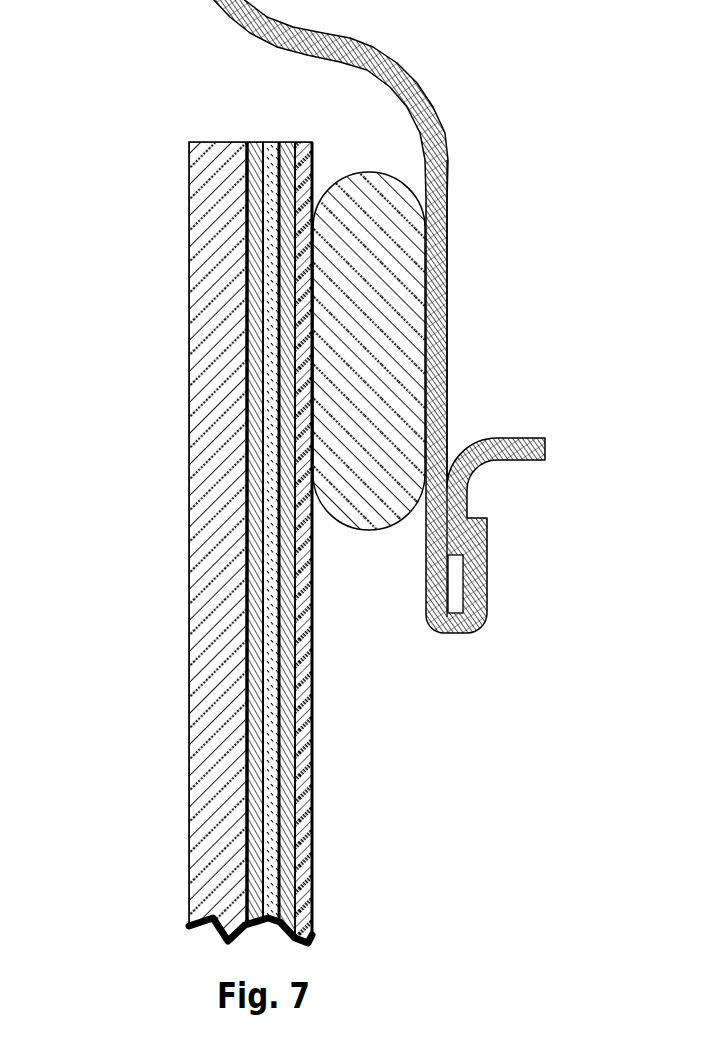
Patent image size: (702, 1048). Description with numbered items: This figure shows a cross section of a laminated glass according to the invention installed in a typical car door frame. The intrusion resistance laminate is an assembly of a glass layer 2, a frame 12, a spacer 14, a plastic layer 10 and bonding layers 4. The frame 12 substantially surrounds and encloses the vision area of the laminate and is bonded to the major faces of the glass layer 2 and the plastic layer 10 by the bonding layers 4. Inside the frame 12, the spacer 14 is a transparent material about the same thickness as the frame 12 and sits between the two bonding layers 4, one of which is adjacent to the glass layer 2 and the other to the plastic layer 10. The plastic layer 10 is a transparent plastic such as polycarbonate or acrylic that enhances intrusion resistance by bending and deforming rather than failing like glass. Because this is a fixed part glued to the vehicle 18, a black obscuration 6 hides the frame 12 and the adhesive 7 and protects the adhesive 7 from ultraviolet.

The glass layer 2 is at (263, 492).
The bonding layers 4 is at (246, 883).
The black obscuration 6 is at (246, 313).
The adhesive 7 is at (362, 540).
The plastic layer 10 is at (315, 865).
The frame 12 is at (268, 140).
The spacer 14 is at (256, 792).
The vehicle 18 is at (445, 122).